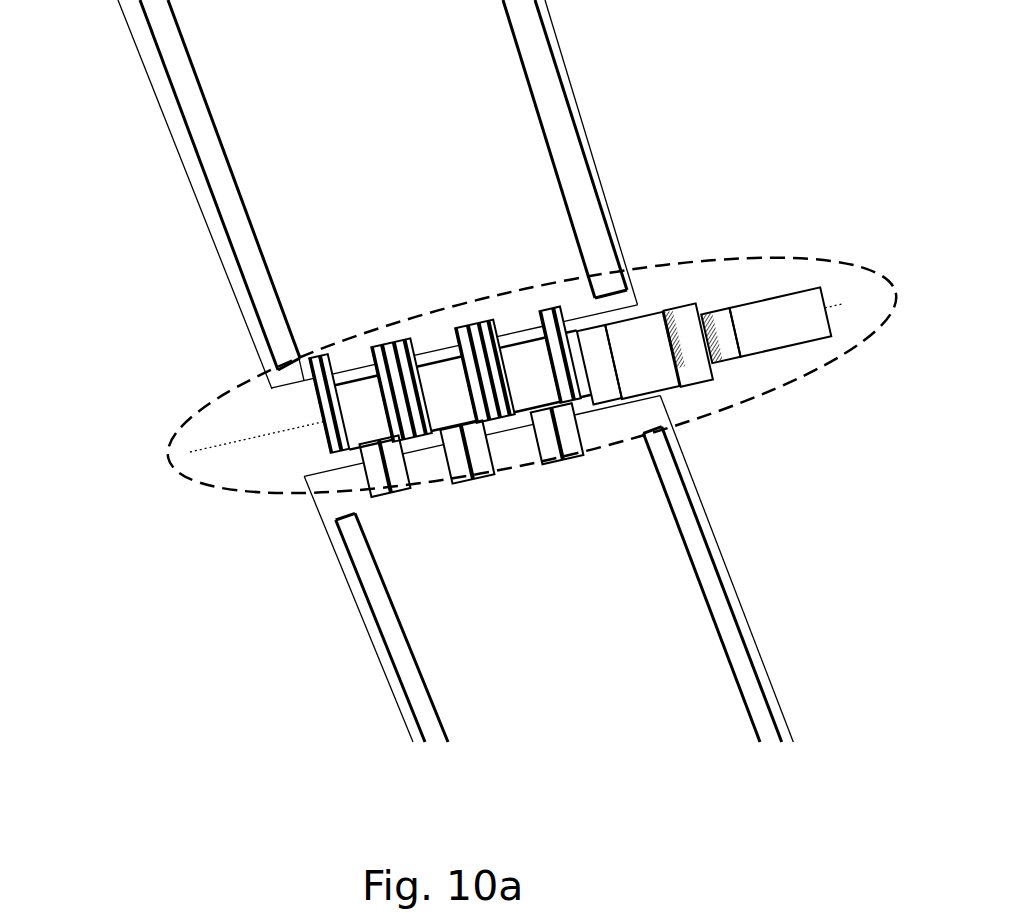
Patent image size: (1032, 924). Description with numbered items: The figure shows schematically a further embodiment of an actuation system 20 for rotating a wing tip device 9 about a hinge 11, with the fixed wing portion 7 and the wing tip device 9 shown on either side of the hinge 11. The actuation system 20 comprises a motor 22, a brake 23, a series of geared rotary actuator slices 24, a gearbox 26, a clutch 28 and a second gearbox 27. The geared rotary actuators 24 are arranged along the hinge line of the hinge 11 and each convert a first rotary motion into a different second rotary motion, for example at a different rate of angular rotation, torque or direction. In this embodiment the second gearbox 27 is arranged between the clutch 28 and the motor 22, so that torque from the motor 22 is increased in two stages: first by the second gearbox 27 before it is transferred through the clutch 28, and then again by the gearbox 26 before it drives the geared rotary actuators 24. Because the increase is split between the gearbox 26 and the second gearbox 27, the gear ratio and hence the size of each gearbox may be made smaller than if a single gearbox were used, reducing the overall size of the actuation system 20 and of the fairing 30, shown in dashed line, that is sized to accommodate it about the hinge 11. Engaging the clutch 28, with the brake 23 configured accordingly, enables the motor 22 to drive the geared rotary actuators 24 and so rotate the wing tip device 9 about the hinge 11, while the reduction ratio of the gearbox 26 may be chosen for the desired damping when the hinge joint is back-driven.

The upper right arm 7 is at (497, 89).
The wing tip device 9 is at (655, 594).
The hinge 11 is at (262, 409).
The actuation system 20 is at (259, 479).
The motor 22 is at (781, 317).
The brake 23 is at (718, 338).
The geared rotary actuator 24 is at (356, 400).
The gearbox 26 is at (607, 383).
The second gearbox 27 is at (697, 360).
The clutch 28 is at (653, 368).
The fairing 30 is at (828, 232).